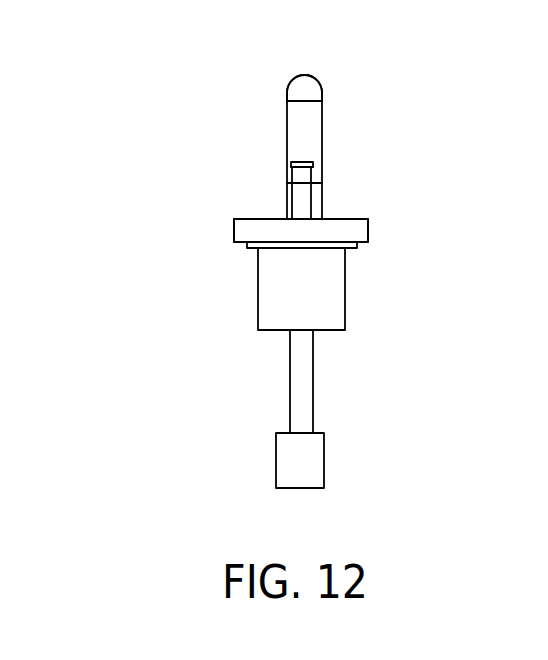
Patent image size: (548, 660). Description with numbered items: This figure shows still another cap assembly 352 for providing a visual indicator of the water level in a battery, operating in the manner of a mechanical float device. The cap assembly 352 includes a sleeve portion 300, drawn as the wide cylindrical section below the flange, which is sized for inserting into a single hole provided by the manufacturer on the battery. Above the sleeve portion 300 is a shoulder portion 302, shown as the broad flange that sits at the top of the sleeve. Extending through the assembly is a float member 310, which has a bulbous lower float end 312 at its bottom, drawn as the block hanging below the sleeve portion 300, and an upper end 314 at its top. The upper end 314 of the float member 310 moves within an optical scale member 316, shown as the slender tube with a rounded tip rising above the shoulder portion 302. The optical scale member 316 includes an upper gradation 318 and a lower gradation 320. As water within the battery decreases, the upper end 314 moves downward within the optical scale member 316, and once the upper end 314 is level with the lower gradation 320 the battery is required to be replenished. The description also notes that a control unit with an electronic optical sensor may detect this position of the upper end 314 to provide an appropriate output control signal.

The cap assembly 352 is at (149, 165).
The upper gradation 318 is at (307, 95).
The optical scale member 316 is at (323, 118).
The upper end 314 is at (302, 161).
The lower gradation 320 is at (302, 182).
The shoulder portion 302 is at (363, 247).
The sleeve portion 300 is at (333, 293).
The float member 310 is at (288, 380).
The bulbous lower float end 312 is at (315, 460).